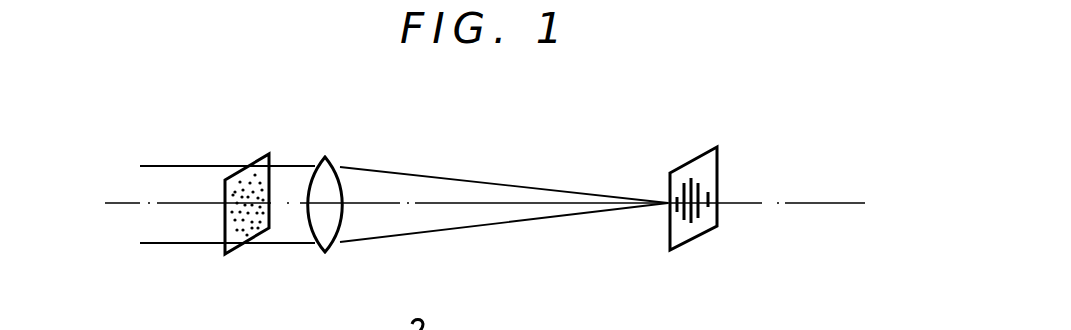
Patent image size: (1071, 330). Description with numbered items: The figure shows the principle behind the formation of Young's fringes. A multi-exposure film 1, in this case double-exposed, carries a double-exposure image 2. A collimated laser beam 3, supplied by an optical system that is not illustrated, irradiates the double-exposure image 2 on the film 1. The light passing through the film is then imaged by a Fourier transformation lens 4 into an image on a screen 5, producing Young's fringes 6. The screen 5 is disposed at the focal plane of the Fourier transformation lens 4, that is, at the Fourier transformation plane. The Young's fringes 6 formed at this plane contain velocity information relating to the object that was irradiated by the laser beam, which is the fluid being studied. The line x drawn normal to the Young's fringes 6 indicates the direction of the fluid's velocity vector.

The multi-exposure film 1 is at (263, 152).
The double-exposure image 2 is at (257, 230).
The collimated laser beam 3 is at (160, 243).
The Fourier transformation lens 4 is at (328, 158).
The screen 5 is at (713, 146).
The Young's fringes 6 is at (705, 182).
The line normal to the Young's fringes X is at (657, 223).